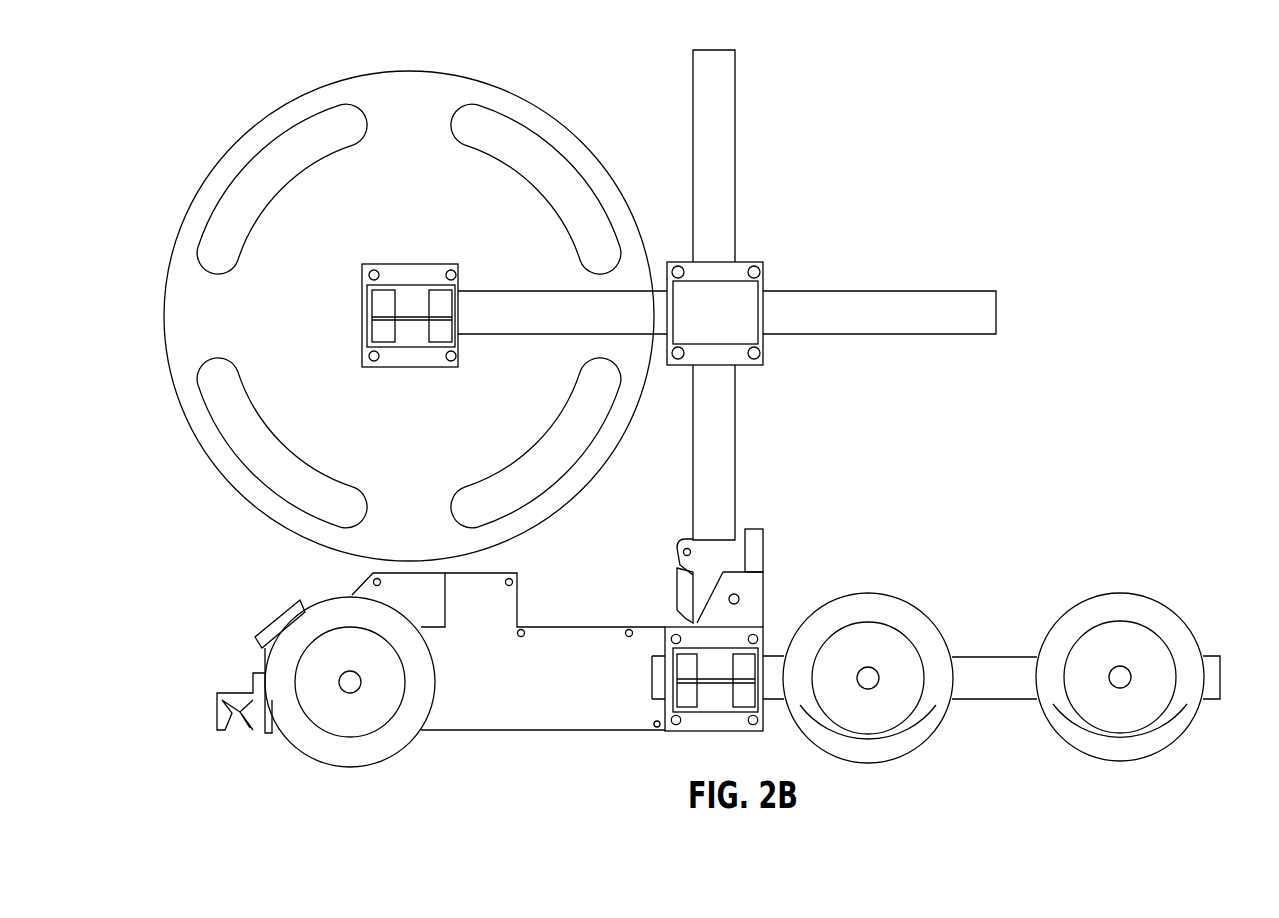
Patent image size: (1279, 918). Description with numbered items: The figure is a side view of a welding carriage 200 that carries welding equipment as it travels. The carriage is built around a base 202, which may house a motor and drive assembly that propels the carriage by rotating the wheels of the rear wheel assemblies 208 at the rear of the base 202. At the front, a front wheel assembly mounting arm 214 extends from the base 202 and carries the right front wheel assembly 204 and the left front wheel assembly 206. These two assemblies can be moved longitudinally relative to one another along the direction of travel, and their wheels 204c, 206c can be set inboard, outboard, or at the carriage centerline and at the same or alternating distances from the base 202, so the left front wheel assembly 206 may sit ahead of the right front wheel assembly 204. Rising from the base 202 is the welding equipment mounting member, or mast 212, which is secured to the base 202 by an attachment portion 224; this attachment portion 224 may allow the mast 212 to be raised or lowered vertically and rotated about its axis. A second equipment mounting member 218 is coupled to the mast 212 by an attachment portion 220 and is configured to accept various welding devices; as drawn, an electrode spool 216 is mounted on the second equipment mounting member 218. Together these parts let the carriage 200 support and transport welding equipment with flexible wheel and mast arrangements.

The welding carriage 200 is at (631, 56).
The base 202 is at (503, 722).
The right front wheel assembly 204 is at (863, 592).
The wheel 204c is at (883, 750).
The left front wheel assembly 206 is at (1112, 592).
The wheel 206c is at (1115, 750).
The rear wheel assembly 208 is at (347, 758).
The welding equipment mounting member (mast) 212 is at (720, 50).
The front wheel assembly mounting arm 214 is at (1207, 653).
The electrode spool 216 is at (225, 158).
The second equipment mounting member 218 is at (930, 291).
The attachment portion 220 is at (676, 262).
The attachment portion 224 is at (755, 529).